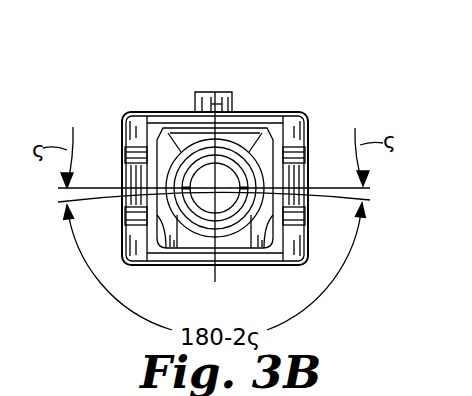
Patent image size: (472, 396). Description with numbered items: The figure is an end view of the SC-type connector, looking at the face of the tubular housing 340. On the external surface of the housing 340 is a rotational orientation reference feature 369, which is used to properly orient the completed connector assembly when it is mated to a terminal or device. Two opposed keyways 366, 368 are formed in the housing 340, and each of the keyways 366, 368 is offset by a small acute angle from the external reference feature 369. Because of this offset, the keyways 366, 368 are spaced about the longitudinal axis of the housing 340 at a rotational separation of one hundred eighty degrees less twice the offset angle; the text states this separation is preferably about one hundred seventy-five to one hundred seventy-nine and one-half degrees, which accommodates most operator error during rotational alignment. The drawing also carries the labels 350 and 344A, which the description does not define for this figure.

The housing 350 is at (146, 118).
The mounting plate 344A is at (176, 143).
The rotational orientation reference feature 369 is at (205, 98).
The housing 340 is at (260, 133).
The keyway 366 is at (150, 125).
The keyway 368 is at (270, 127).